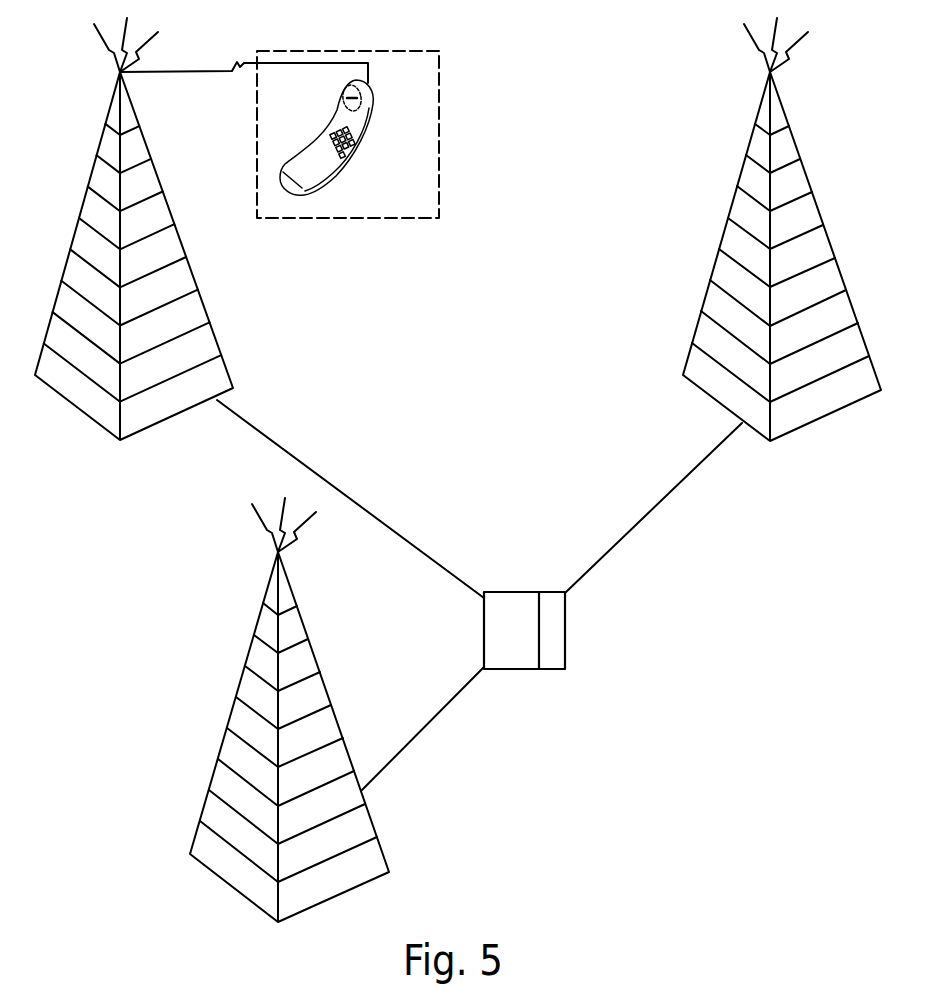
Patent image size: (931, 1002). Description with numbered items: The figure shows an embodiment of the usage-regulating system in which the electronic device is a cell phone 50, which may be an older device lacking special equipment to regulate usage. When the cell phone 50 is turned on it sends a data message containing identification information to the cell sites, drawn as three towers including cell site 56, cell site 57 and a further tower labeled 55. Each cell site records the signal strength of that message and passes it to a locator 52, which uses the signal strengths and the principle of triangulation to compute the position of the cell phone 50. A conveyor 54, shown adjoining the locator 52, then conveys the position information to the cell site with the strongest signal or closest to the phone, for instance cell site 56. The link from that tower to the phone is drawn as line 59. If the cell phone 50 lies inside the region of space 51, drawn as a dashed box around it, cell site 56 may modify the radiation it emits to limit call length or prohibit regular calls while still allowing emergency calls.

The cell phone 50 is at (323, 140).
The region of space 51 is at (273, 218).
The locator 52 is at (507, 670).
The conveyor 54 is at (553, 592).
The cell site transmitter tower 55 is at (712, 400).
The cell site 56 is at (65, 400).
The cell site 57 is at (220, 880).
The wireless communication link 59 is at (202, 68).